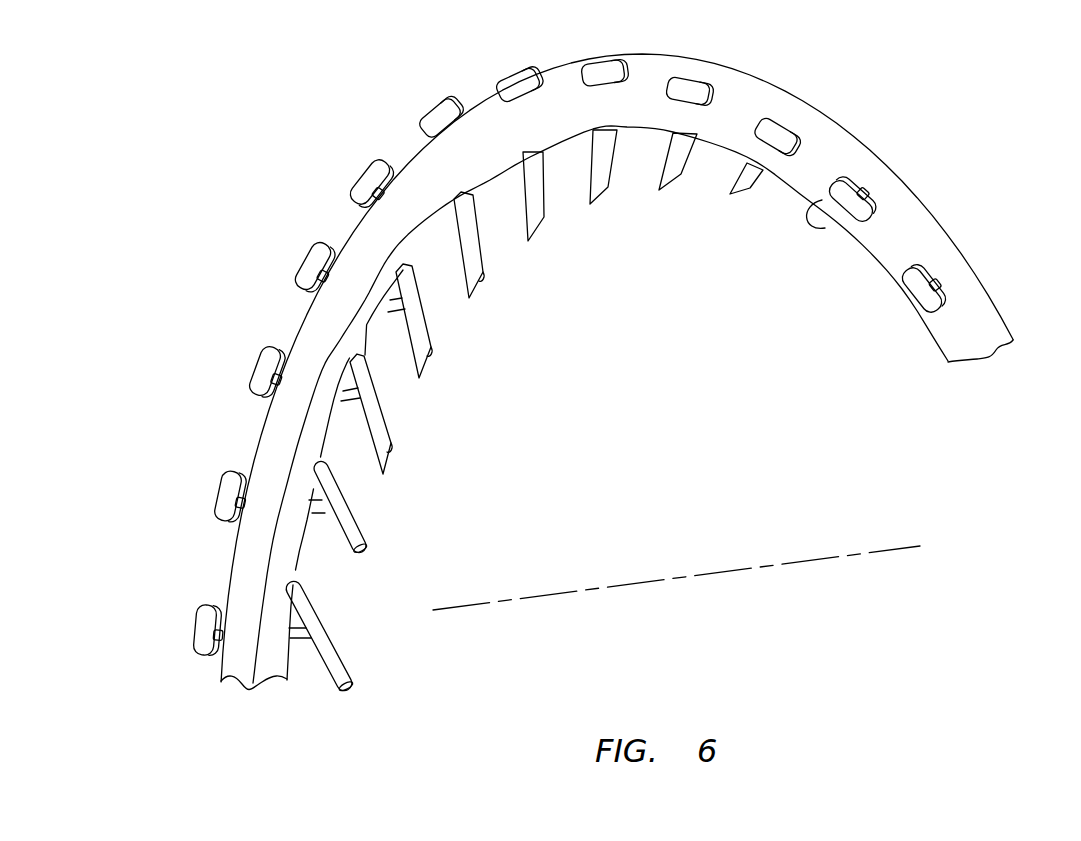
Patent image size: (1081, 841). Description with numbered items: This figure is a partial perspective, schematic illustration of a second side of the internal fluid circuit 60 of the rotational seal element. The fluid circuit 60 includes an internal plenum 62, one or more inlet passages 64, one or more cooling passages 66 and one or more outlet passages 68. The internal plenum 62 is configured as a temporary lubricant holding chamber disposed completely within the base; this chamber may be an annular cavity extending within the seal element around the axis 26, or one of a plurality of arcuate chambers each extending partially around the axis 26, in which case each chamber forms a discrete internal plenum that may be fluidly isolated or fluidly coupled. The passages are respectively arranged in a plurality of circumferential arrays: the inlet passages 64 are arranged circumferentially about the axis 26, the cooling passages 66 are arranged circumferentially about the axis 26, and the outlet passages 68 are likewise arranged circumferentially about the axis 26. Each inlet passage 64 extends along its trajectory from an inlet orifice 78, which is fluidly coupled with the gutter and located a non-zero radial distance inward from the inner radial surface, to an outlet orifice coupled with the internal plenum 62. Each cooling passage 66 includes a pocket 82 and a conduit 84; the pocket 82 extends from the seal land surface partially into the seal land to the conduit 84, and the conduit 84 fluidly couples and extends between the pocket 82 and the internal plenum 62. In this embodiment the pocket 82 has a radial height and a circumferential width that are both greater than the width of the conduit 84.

The internal fluid circuit 60 is at (987, 111).
The internal plenum 62 is at (923, 210).
The inlet passages 64 is at (492, 256).
The cooling passages 66 is at (286, 266).
The outlet passages 68 is at (317, 530).
The inlet orifice 78 is at (480, 286).
The pocket 82 is at (318, 248).
The conduit 84 is at (842, 190).
The axis 26 is at (853, 553).